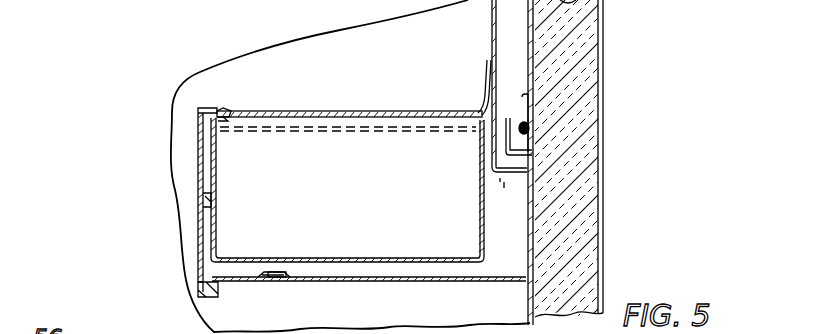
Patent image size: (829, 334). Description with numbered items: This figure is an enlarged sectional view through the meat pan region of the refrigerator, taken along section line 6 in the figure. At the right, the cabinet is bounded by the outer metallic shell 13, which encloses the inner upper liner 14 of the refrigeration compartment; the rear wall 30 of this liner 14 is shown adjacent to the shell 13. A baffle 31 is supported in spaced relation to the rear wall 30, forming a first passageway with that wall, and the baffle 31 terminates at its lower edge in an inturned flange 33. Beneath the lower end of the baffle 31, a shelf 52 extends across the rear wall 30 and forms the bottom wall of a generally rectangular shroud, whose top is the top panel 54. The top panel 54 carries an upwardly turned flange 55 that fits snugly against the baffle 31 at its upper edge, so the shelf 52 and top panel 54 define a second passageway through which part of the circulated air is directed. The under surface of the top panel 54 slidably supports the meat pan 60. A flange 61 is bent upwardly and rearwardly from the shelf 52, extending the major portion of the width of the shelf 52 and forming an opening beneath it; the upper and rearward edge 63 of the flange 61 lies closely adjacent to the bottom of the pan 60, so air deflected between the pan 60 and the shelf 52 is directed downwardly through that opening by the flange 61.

The section line 6- 6 is at (317, 108).
The outer metallic shell 13 is at (602, 143).
The inner upper liner 14 is at (593, 273).
The rear wall 30 is at (533, 70).
The baffle 31 is at (497, 32).
The inturned flange 33 is at (500, 178).
The shelf 52 is at (370, 282).
The top panel 54 is at (402, 111).
The upwardly turned flange 55 is at (478, 80).
The meat pan 60 is at (441, 272).
The flange 61 is at (268, 275).
The upper and rearward edge 63 is at (278, 274).